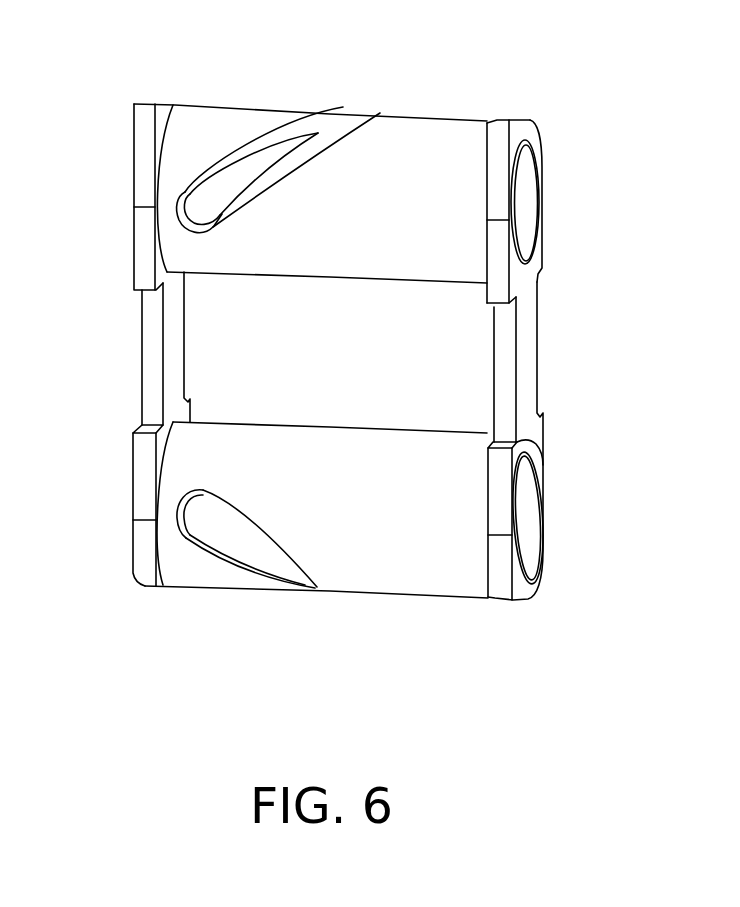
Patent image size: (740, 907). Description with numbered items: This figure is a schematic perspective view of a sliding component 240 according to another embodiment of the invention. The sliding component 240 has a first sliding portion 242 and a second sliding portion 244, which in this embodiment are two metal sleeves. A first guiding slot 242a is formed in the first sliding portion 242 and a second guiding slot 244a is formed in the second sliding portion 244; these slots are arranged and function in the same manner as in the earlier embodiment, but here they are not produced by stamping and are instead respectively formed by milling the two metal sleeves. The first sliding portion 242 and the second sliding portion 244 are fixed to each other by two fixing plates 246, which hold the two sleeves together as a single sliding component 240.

The sliding component 240 is at (582, 138).
The first sliding portion 242 is at (395, 147).
The first guiding slot 242a is at (273, 144).
The second sliding portion 244 is at (372, 538).
The second guiding slot 244a is at (233, 548).
The fixing plates 246 is at (503, 373).